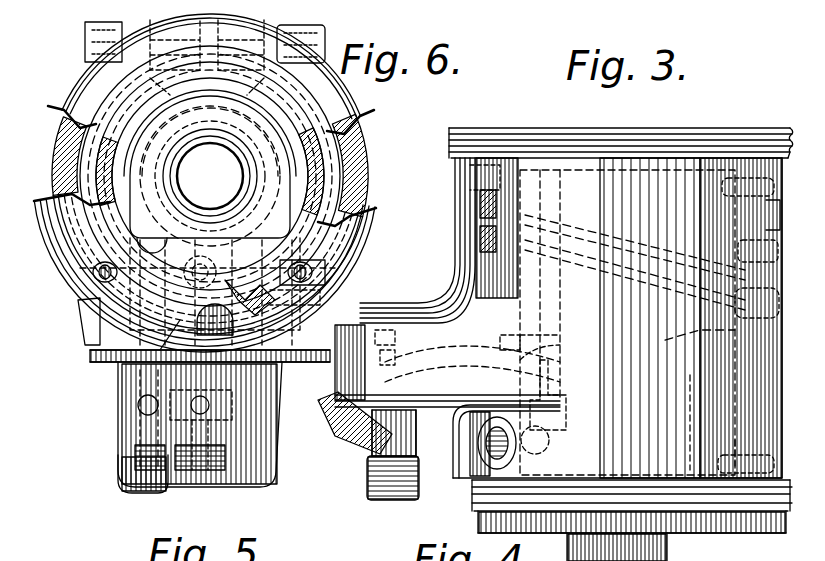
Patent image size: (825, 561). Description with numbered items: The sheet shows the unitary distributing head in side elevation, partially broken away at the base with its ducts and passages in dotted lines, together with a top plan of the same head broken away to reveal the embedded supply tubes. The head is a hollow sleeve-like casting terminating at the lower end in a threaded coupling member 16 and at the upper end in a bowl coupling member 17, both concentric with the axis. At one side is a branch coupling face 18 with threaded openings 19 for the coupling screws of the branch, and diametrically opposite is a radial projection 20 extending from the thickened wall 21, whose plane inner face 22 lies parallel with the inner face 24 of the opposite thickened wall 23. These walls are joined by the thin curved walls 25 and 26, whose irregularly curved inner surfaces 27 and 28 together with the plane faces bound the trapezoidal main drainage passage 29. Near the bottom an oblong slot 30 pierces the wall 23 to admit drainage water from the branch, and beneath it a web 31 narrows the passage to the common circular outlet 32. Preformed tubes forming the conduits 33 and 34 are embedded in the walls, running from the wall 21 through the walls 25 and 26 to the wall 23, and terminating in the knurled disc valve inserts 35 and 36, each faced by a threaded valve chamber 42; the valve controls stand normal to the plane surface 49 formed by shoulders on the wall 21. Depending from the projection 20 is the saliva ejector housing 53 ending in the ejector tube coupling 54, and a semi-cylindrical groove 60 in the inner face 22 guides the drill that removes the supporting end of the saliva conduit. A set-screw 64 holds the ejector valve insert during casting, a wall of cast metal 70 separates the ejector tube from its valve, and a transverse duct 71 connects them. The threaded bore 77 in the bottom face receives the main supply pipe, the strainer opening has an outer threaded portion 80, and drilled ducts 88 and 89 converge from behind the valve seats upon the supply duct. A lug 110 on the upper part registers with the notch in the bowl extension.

In FIG. 3, the threaded coupling member 16 is at (708, 545).
In FIG. 6, the bowl coupling member 17 is at (300, 262).
In FIG. 3, the bowl coupling member 17 is at (714, 134).
In FIG. 6, the branch coupling face 18 is at (84, 22).
In FIG. 3, the branch coupling face 18 is at (780, 223).
In FIG. 6, the threaded openings 19 is at (88, 45).
In FIG. 3, the threaded openings 19 is at (776, 185).
In FIG. 6, the radial projection 20 is at (266, 440).
In FIG. 3, the radial projection 20 is at (426, 320).
In FIG. 6, the wall 21 is at (217, 303).
In FIG. 6, the inner face 22 is at (248, 231).
In FIG. 3, the inner face 22 is at (572, 350).
In FIG. 6, the wall 23 is at (210, 129).
In FIG. 6, the inner face 24 is at (196, 118).
In FIG. 3, the inner face 24 is at (665, 343).
In FIG. 6, the curved thin wall 25 is at (58, 129).
In FIG. 6, the curved thin wall 26 is at (340, 127).
In FIG. 3, the curved thin wall 26 is at (617, 318).
In FIG. 6, the irregularly curved inner surface 27 is at (110, 172).
In FIG. 6, the irregularly curved inner surface 28 is at (300, 181).
In FIG. 6, the main drainage passage 29 is at (240, 132).
In FIG. 3, the oblong slot 30 is at (690, 431).
In FIG. 6, the web 31 is at (160, 204).
In FIG. 3, the web 31 is at (675, 455).
In FIG. 6, the common circular outlet 32 is at (234, 178).
In FIG. 6, the conduit 33 is at (80, 167).
In FIG. 3, the conduit 33 is at (645, 239).
In FIG. 6, the conduit 34 is at (332, 181).
In FIG. 3, the conduit 34 is at (640, 297).
In FIG. 6, the valve insert 35 is at (75, 290).
In FIG. 6, the valve insert 36 is at (292, 300).
In FIG. 3, the valve insert 36 is at (482, 207).
In FIG. 3, the valve chamber 42 is at (482, 234).
In FIG. 6, the plane surface 49 is at (82, 338).
In FIG. 3, the plane surface 49 is at (454, 181).
In FIG. 6, the saliva ejector housing 53 is at (130, 494).
In FIG. 3, the saliva ejector housing 53 is at (326, 413).
In FIG. 3, the ejector tube coupling 54 is at (366, 486).
In FIG. 6, the semi-cylindrical vertical groove 60 is at (148, 236).
In FIG. 3, the semi-cylindrical vertical groove 60 is at (560, 359).
In FIG. 6, the set-screw 64 is at (201, 414).
In FIG. 6, the wall of cast metal 70 is at (160, 488).
In FIG. 6, the transverse duct 71 is at (180, 478).
In FIG. 3, the transverse duct 71 is at (338, 377).
In FIG. 3, the threaded bore 77 is at (518, 449).
In FIG. 3, the outer threaded portion 80 is at (456, 470).
In FIG. 6, the duct 88 is at (92, 272).
In FIG. 6, the duct 89 is at (312, 274).
In FIG. 3, the duct 89 is at (520, 330).
In FIG. 6, the lug 110 is at (140, 368).
In FIG. 3, the lug 110 is at (491, 132).